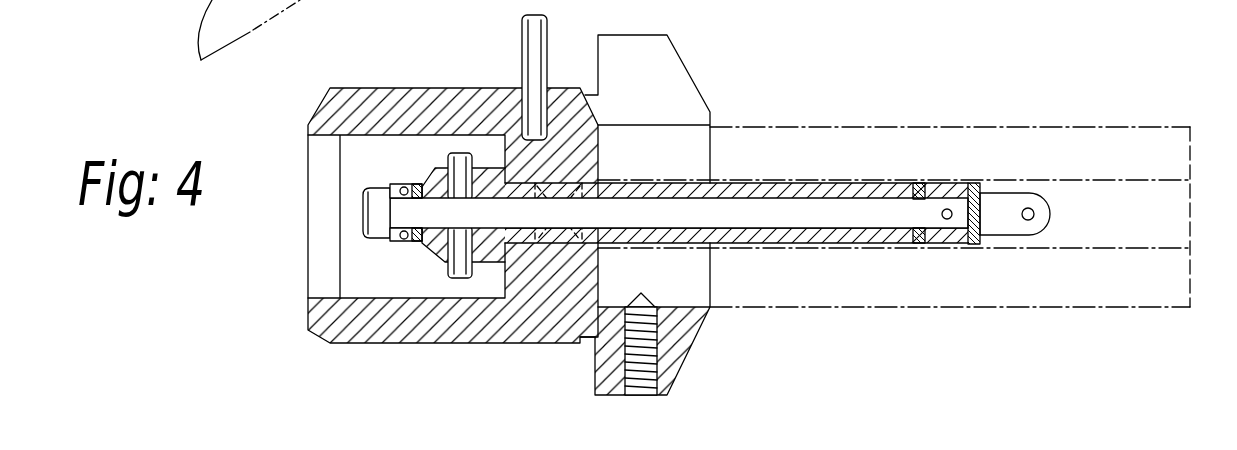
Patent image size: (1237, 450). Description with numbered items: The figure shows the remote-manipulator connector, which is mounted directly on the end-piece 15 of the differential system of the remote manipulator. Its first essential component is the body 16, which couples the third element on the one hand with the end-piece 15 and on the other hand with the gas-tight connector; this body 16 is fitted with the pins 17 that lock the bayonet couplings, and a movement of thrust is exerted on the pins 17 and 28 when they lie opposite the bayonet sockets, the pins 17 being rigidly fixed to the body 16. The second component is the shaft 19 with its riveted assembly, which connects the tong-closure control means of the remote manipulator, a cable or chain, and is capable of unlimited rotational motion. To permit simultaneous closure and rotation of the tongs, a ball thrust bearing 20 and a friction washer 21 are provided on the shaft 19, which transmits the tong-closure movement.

The end-piece 15 is at (765, 145).
The body 16 is at (356, 104).
The pins 17 is at (537, 57).
The shaft 19 is at (970, 186).
The ball thrust bearing 20 is at (414, 183).
The friction washer 21 is at (923, 187).
The pin 28 is at (461, 152).